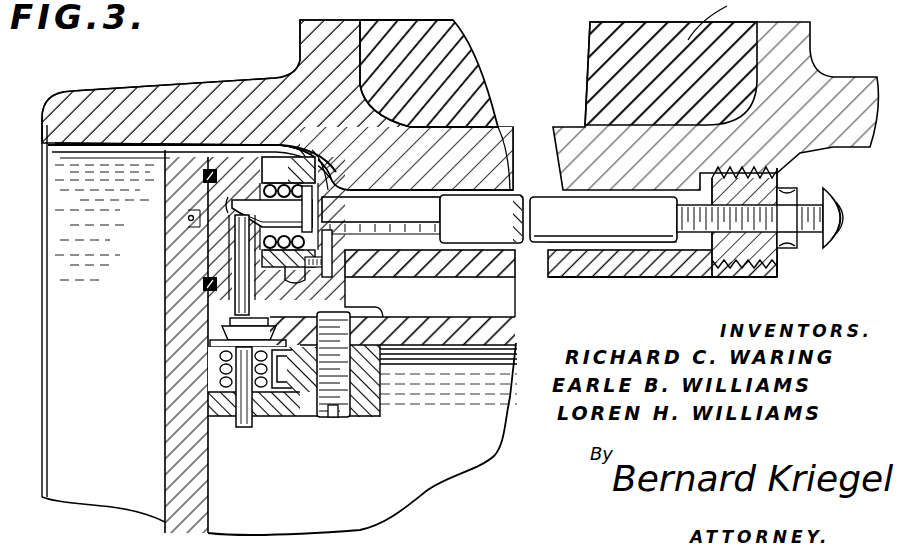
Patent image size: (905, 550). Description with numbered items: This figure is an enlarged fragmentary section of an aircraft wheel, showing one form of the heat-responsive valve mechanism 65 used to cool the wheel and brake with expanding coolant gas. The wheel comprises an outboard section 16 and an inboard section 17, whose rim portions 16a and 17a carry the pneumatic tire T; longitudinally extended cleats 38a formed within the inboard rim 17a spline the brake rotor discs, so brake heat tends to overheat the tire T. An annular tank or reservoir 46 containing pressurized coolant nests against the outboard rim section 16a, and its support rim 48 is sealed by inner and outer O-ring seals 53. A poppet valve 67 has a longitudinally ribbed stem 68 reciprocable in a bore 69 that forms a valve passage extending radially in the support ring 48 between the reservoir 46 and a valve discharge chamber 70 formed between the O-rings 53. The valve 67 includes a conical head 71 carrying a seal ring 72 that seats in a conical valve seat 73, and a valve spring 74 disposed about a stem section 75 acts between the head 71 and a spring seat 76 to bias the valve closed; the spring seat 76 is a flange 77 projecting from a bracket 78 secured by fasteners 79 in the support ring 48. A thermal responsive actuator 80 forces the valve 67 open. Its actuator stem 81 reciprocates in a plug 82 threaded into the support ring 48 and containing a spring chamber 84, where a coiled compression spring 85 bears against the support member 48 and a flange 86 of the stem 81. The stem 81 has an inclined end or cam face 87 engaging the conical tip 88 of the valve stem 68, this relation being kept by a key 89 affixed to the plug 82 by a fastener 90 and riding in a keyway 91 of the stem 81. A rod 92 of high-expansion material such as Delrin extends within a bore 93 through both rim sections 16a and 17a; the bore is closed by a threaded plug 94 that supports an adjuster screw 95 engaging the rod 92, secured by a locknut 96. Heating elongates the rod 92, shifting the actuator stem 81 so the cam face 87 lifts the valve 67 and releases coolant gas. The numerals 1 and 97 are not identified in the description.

The tool assembly 1 is at (712, 20).
The outboard section 16 is at (306, 42).
The outboard rim section 16a is at (497, 130).
The inboard section 17 is at (814, 42).
The rim of the inboard section 17a is at (583, 110).
The pneumatic tire T is at (436, 42).
The cleats 38a is at (620, 267).
The tank or reservoir 46 is at (163, 486).
The support rim 48 is at (378, 288).
The O-ring seals 53 is at (204, 177).
The heat-responsive valve mechanism 65 is at (506, 287).
The poppet valve 67 is at (225, 298).
The longitudinally ribbed stem 68 is at (233, 250).
The bore 69 is at (250, 299).
The valve discharge chamber 70 is at (230, 203).
The conical head 71 is at (227, 343).
The seal ring 72 is at (235, 330).
The conical valve seat 73 is at (247, 323).
The valve spring 74 is at (223, 382).
The stem section 75 is at (238, 427).
The spring seat 76 is at (217, 413).
The flange 77 is at (283, 407).
The bracket 78 is at (363, 395).
The fasteners 79 is at (353, 400).
The thermal responsive actuator 80 is at (491, 182).
The actuator stem 81 is at (393, 213).
The plug 82 is at (310, 172).
The spring chamber 84 is at (264, 178).
The coiled compression spring 85 is at (265, 178).
The flange 86 is at (330, 193).
The inclined end or cam face 87 is at (208, 190).
The conical tip 88 is at (240, 217).
The key 89 is at (330, 245).
The fastener 90 is at (310, 283).
The keyway 91 is at (427, 233).
The rod 92 is at (624, 210).
The bore 93 is at (687, 250).
The threaded plug 94 is at (752, 183).
The adjuster screw 95 is at (813, 233).
The locknut 96 is at (788, 250).
The pivot 97 is at (200, 215).